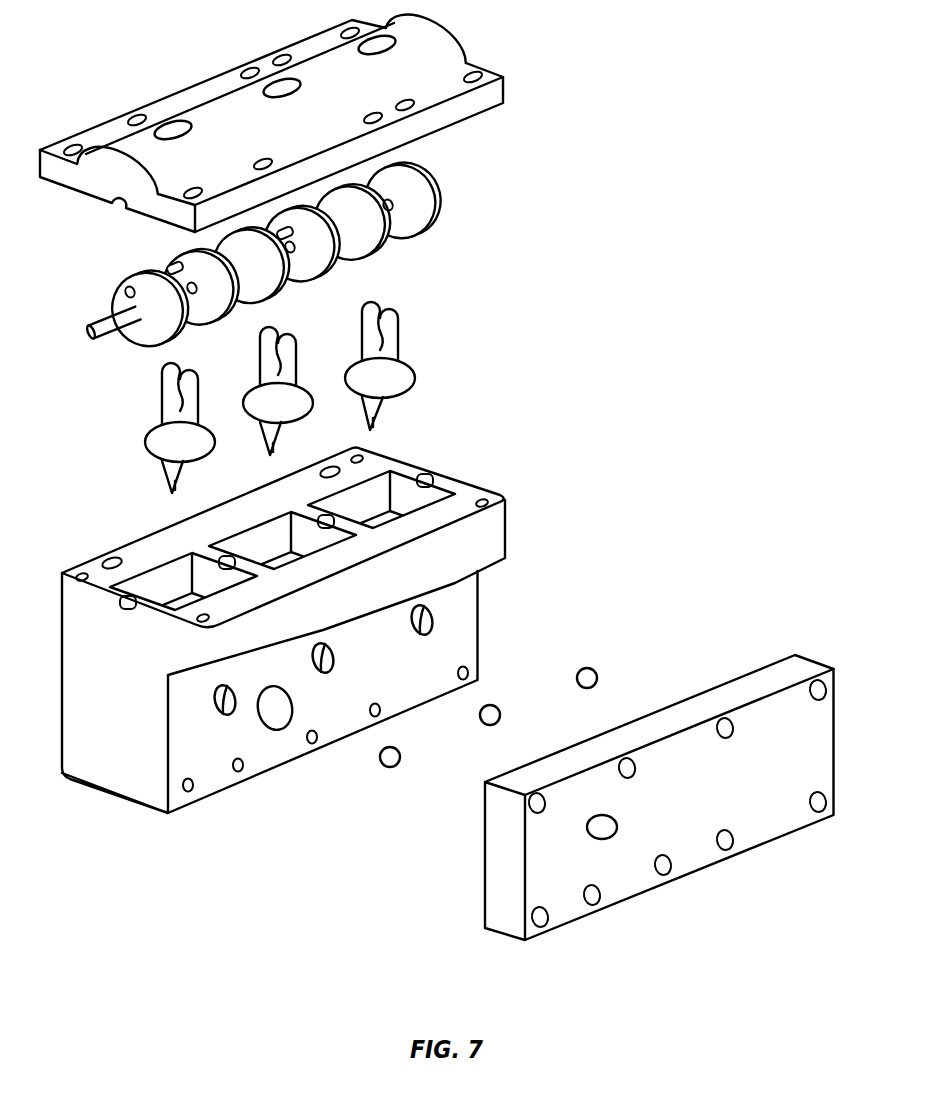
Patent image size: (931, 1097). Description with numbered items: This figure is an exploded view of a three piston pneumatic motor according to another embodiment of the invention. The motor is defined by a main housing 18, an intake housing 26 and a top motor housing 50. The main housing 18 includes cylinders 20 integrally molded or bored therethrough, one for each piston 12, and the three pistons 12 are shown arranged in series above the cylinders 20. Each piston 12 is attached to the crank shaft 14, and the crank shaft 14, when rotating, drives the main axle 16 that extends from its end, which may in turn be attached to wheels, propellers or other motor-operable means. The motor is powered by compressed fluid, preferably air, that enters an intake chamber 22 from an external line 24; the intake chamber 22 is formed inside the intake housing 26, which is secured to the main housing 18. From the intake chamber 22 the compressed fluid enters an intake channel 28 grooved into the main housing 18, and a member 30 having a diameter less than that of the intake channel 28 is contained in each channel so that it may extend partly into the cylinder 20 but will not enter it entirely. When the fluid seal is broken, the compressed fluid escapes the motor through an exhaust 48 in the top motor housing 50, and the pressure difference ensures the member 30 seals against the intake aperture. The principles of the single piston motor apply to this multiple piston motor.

The piston 12 is at (170, 405).
The crank shaft 14 is at (172, 268).
The main axle 16 is at (88, 336).
The main housing 18 is at (499, 540).
The cylinder 20 is at (157, 583).
The intake chamber 22 is at (287, 715).
The external line 24 is at (613, 823).
The intake housing 26 is at (803, 665).
The intake channel 28 is at (218, 706).
The member 30 is at (381, 762).
The exhaust 48 is at (177, 137).
The top motor housing 50 is at (441, 40).